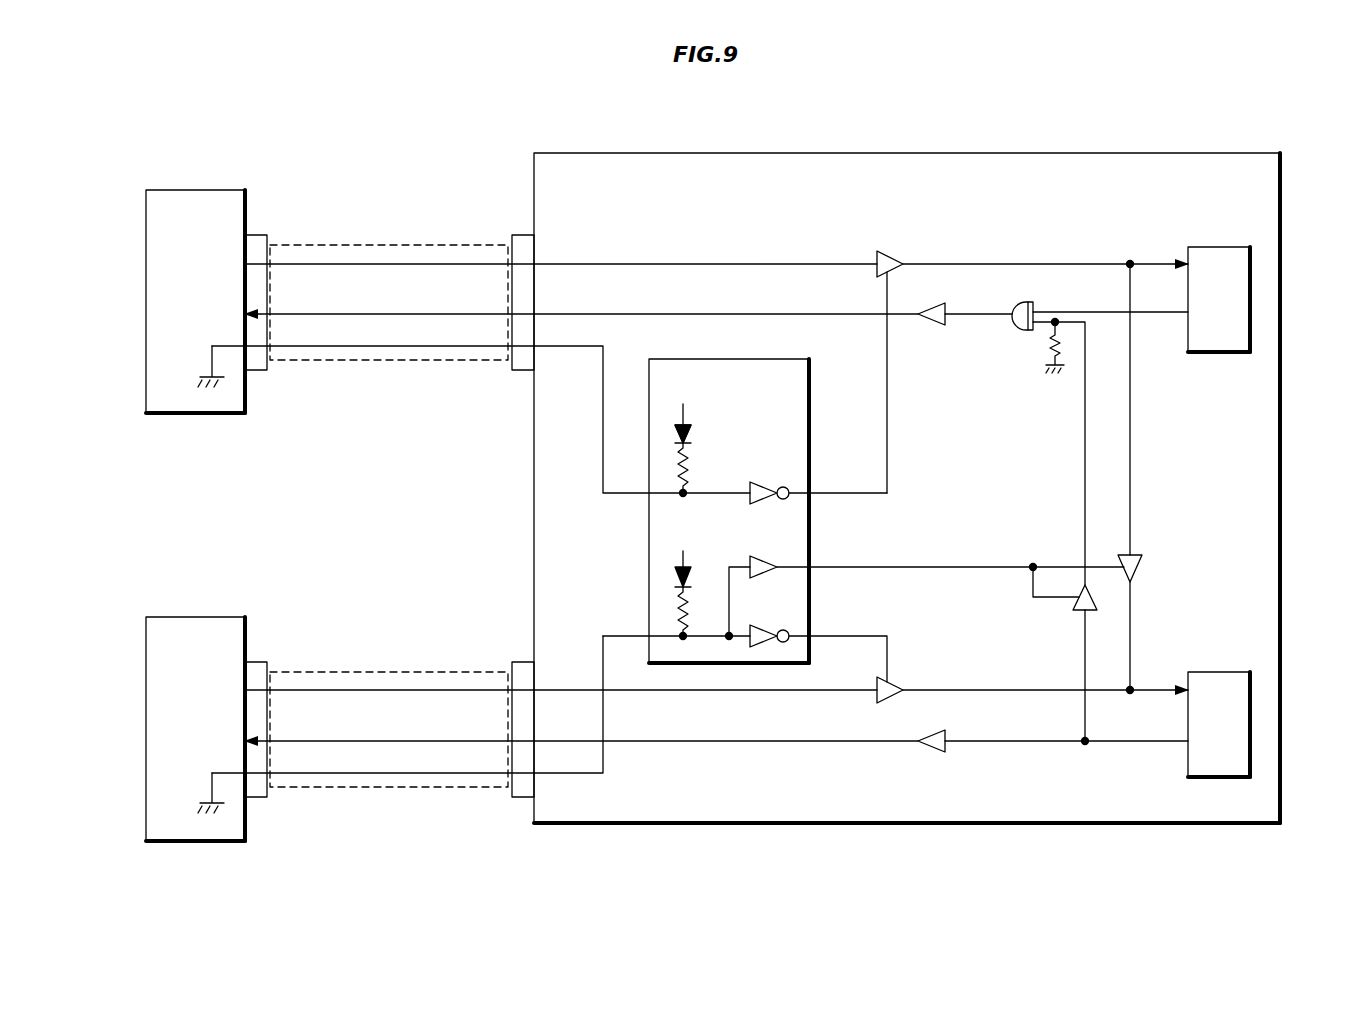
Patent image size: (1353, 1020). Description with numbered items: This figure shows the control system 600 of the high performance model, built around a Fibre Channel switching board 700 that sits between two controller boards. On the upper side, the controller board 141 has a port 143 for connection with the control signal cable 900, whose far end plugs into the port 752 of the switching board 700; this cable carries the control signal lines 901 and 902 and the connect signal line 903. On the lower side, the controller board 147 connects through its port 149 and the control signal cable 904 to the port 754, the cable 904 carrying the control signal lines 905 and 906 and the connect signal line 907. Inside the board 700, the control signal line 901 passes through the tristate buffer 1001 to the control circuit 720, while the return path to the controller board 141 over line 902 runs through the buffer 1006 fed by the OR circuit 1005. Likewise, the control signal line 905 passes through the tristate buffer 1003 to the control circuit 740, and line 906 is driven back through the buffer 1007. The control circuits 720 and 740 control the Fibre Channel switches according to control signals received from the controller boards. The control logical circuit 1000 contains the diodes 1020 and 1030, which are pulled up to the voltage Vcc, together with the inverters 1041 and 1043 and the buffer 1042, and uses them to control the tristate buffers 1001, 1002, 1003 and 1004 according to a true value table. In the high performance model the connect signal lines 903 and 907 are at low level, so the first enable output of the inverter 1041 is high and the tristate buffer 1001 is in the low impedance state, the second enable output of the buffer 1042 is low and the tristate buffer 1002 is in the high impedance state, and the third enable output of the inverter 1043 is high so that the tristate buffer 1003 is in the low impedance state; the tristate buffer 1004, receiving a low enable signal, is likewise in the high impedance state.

The control system in the high performance model 600 is at (1148, 95).
The Fibre Channel switching board 700 is at (828, 153).
The controller board 141 is at (193, 190).
The port 143 is at (267, 235).
The control signal cable 900 is at (400, 245).
The port 752 is at (512, 235).
The control signal line 901 is at (548, 264).
The control signal line 902 is at (552, 314).
The connect signal line 903 is at (557, 346).
The tristate buffer 1001 is at (873, 272).
The control circuit 720 is at (1205, 247).
The buffer 1006 is at (934, 326).
The OR circuit 1005 is at (1030, 302).
The control logical circuit 1000 is at (649, 517).
The diode 1020 is at (690, 432).
The inverter 1041 is at (760, 482).
The buffer 1042 is at (760, 556).
The inverter 1043 is at (760, 625).
The diode 1030 is at (690, 574).
The tristate buffer 1002 is at (1138, 557).
The tristate buffer 1004 is at (1081, 613).
The tristate buffer 1003 is at (897, 684).
The control circuit 740 is at (1205, 672).
The buffer 1007 is at (930, 754).
The controller board 147 is at (193, 617).
The connector of second unit 149 is at (267, 662).
The control signal cable 904 is at (400, 672).
The port 754 is at (512, 662).
The control signal line 905 is at (548, 690).
The control signal line 906 is at (548, 741).
The connect signal line 907 is at (557, 773).